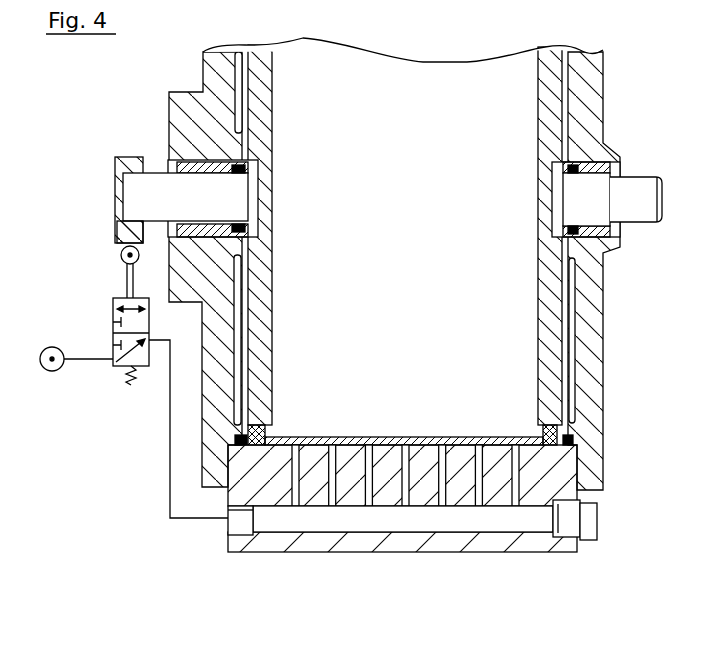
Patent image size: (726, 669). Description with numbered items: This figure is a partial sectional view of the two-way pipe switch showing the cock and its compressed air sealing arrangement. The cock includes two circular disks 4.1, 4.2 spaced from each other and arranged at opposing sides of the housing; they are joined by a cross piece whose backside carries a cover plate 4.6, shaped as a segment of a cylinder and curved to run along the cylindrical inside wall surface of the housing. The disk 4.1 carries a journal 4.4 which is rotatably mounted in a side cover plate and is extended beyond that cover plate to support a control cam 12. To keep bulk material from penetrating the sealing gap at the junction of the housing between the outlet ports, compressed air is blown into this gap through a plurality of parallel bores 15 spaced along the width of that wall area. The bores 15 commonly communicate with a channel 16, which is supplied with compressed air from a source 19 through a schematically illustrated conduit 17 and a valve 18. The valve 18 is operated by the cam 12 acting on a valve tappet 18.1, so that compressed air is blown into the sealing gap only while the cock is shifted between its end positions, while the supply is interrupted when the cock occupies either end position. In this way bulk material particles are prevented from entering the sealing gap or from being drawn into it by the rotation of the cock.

The circular disk 4.1 is at (266, 90).
The circular disk 4.2 is at (547, 98).
The journal 4.4 is at (151, 188).
The cover plate 4.6 is at (460, 440).
The control cam 12 is at (120, 230).
The bores 15 is at (330, 460).
The channel 16 is at (405, 520).
The conduit 17 is at (188, 520).
The valve 18 is at (113, 330).
The valve tappet 18.1 is at (125, 278).
The source 19 is at (52, 372).